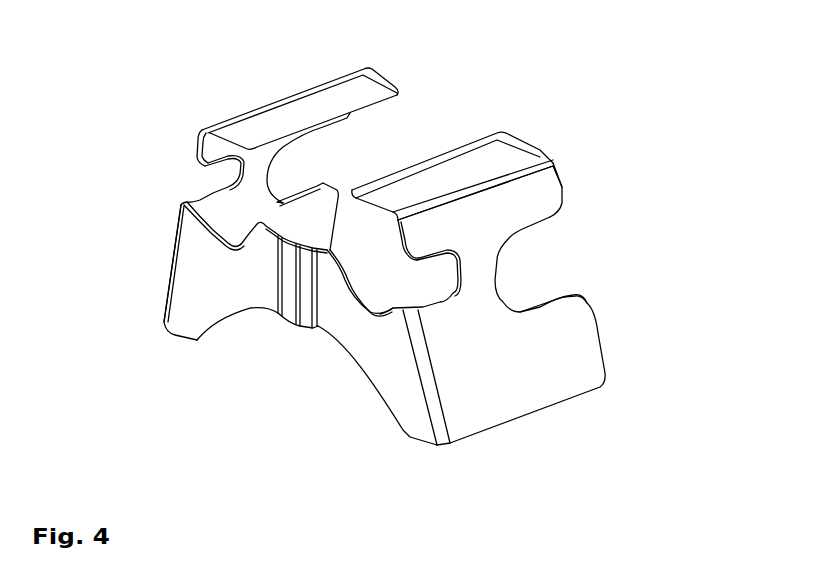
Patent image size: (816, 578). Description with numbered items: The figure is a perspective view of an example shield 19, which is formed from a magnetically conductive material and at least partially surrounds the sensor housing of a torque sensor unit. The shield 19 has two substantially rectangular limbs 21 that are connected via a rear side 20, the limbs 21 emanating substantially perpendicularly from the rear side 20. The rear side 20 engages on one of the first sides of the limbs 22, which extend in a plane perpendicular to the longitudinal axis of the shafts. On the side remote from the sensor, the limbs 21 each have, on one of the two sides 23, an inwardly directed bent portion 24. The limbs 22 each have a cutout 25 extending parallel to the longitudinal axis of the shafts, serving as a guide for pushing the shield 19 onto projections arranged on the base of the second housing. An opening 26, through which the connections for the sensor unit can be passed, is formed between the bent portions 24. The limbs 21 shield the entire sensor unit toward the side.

The shield 19 is at (473, 82).
The rear side 20 is at (365, 333).
The limbs 21 is at (285, 115).
The limbs 22 is at (167, 267).
The sides 23 is at (527, 173).
The bent portion 24 is at (488, 158).
The cutout 25 is at (230, 175).
The opening 26 is at (390, 140).